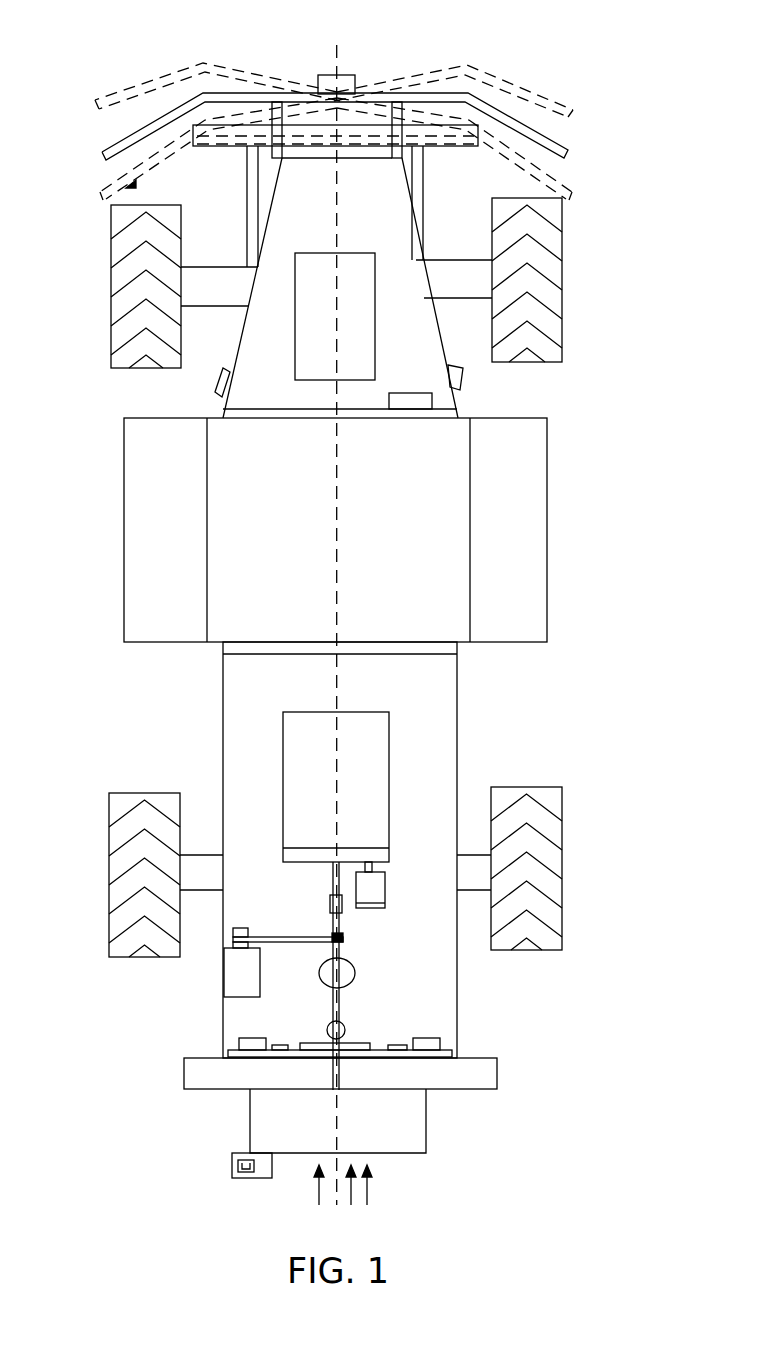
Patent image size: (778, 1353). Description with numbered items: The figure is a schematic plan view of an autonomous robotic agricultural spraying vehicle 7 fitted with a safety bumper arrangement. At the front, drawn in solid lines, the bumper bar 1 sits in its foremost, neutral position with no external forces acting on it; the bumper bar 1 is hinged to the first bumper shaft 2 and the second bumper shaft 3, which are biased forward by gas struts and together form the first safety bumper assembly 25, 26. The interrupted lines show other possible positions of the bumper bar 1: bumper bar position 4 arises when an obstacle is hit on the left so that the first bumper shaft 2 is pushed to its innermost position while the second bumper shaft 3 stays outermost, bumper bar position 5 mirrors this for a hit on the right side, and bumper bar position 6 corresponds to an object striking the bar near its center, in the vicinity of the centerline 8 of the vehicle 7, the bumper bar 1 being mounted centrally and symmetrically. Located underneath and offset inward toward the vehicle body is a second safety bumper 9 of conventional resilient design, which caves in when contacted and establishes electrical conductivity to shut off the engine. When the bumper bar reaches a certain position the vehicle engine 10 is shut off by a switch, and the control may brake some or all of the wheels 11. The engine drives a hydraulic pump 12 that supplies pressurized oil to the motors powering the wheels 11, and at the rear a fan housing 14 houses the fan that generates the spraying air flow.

The bumper bar 1 is at (555, 142).
The first bumper shaft 2 is at (270, 120).
The second bumper shaft 3 is at (393, 107).
The bumper bar position 4 is at (572, 98).
The bumper bar position 5 is at (112, 93).
The bumper bar position 6 is at (290, 138).
The vehicle 7 is at (110, 535).
The centerline 8 is at (337, 55).
The second safety bumper 9 is at (430, 133).
The vehicle engine 10 is at (305, 775).
The wheels 11 is at (552, 280).
The hydraulic pump 12 is at (238, 978).
The fan housing 14 is at (483, 1080).
The first safety bumper assembly 25 is at (370, 89).
The first safety bumper assembly 26 is at (552, 167).